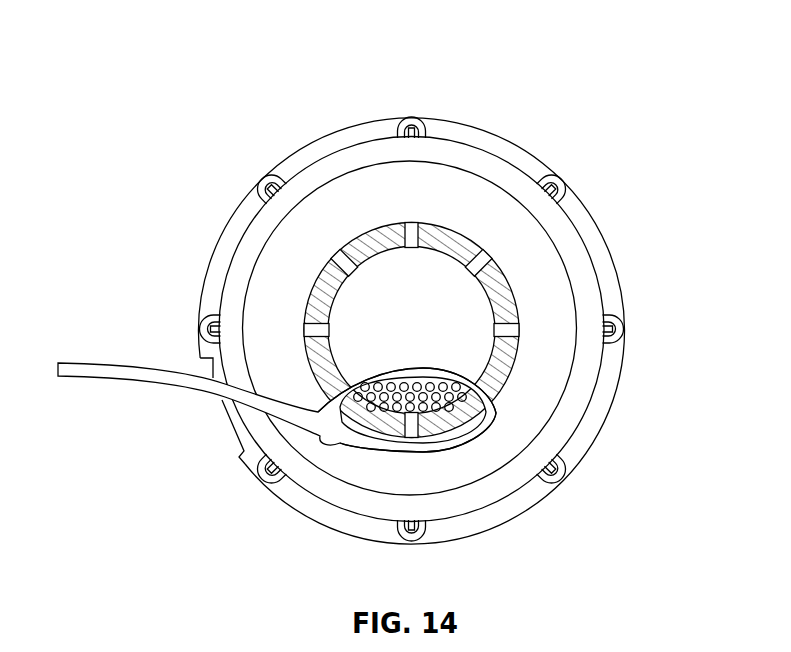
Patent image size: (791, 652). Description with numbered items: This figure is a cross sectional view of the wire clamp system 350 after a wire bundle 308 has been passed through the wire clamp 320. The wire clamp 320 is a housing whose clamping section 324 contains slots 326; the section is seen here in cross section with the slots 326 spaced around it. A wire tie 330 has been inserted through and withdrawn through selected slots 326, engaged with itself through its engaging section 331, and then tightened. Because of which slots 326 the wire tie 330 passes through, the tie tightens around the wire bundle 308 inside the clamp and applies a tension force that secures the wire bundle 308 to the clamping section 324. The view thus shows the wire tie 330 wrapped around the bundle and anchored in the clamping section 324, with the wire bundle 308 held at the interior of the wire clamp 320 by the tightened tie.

The wire clamp system 350 is at (522, 85).
The wire clamp 320 is at (356, 120).
The clamping section 324 is at (515, 287).
The slots 326 is at (496, 332).
The wire tie 330 is at (152, 380).
The engaging section 331 is at (320, 405).
The wire bundle 308 is at (400, 393).